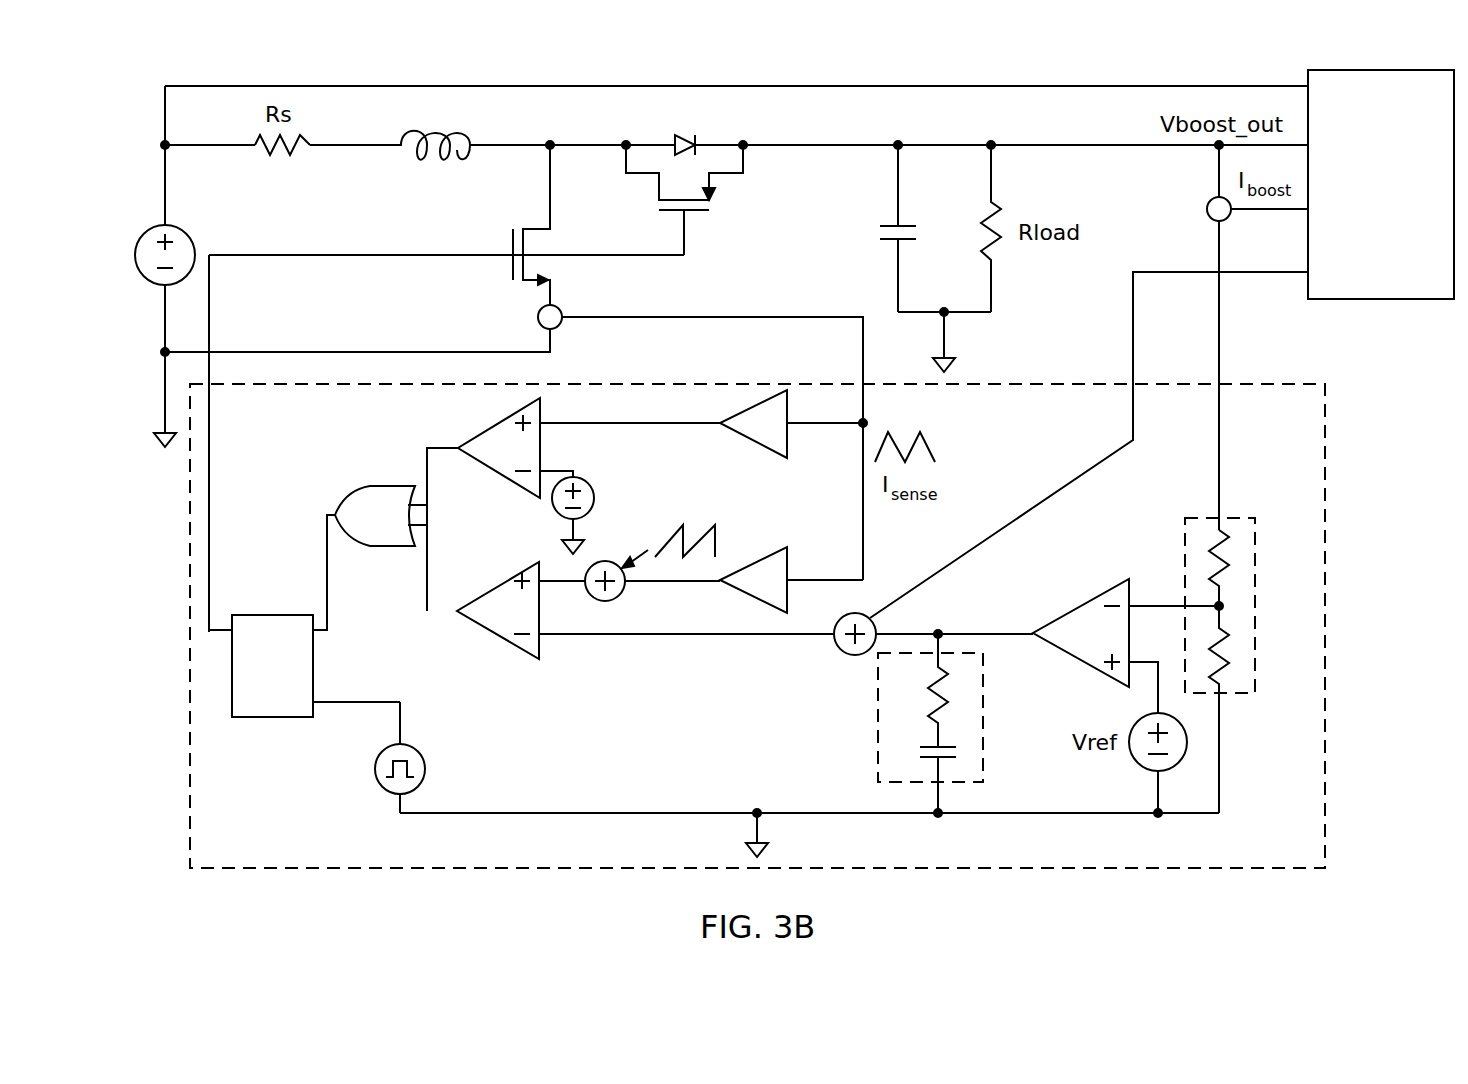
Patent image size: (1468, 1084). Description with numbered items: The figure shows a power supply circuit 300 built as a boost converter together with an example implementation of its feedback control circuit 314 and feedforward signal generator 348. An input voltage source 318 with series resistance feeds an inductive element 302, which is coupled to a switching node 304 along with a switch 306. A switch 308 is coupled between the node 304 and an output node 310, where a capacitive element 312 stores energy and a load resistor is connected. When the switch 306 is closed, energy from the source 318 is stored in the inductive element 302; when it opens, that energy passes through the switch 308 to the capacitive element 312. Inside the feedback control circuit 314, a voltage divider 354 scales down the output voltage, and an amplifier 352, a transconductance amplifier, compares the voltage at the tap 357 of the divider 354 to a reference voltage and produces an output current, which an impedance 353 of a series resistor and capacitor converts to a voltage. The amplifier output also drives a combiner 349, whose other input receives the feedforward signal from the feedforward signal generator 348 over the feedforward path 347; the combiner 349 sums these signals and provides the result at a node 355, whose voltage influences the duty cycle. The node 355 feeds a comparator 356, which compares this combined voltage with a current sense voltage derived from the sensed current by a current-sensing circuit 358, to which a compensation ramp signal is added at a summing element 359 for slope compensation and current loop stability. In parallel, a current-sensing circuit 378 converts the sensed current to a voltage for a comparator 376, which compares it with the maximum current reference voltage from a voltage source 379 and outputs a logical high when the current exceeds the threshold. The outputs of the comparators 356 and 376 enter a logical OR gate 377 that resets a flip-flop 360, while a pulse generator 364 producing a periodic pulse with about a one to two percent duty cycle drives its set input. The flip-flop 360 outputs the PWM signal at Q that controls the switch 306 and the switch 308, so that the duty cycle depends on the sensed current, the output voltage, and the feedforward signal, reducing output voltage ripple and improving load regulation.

The power supply circuit 300 is at (152, 68).
The inductive element 302 is at (440, 165).
The node 304 is at (552, 143).
The switch 306 is at (523, 289).
The switch 308 is at (694, 214).
The output node 310 is at (900, 143).
The capacitive element 312 is at (902, 226).
The feedback control circuit 314 is at (1330, 752).
The input voltage source 318 is at (183, 232).
The feedforward path 347 is at (1133, 336).
The feedforward signal generator 348 is at (1380, 299).
The combiner 349 is at (846, 654).
The amplifier 352 is at (1080, 667).
The impedance 353 is at (878, 736).
The voltage divider 354 is at (1237, 518).
The node 355 is at (700, 636).
The comparator 356 is at (501, 586).
The tap 357 is at (1256, 622).
The current-sensing circuit 358 is at (790, 602).
The compensation ramp summing node 359 is at (606, 602).
The flip-flop 360 is at (274, 718).
The pulse generator 364 is at (416, 750).
The comparator 376 is at (496, 428).
The logical OR gate 377 is at (391, 486).
The current-sensing circuit 378 is at (790, 440).
The voltage source 379 is at (583, 482).